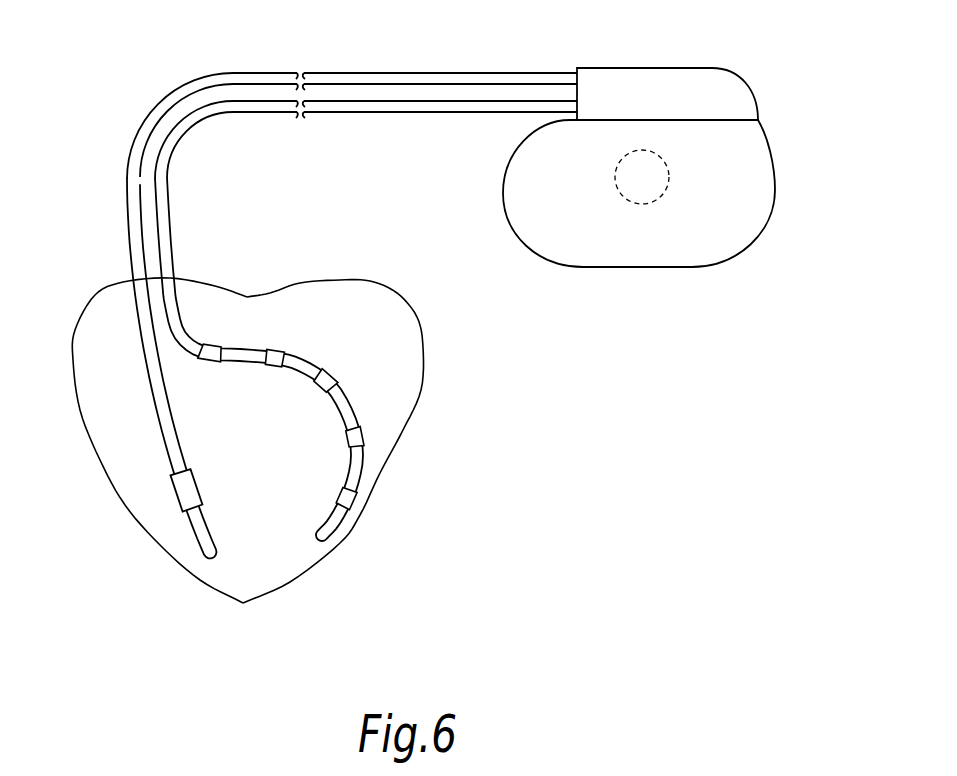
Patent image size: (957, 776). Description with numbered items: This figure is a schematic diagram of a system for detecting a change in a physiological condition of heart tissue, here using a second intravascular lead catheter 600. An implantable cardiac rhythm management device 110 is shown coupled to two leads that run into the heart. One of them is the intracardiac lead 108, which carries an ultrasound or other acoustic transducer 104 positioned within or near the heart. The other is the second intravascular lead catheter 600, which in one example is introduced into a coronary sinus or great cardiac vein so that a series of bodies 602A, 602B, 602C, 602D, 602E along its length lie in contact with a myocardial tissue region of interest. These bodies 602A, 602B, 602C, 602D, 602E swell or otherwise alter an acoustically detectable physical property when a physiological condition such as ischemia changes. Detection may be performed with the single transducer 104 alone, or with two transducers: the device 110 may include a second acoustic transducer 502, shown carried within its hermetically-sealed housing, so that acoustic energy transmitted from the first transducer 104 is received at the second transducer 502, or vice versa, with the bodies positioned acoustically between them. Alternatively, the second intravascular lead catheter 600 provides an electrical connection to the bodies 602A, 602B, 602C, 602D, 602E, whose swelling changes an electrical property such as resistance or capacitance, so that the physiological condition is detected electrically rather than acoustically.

The acoustic transducer 104 is at (172, 489).
The intracardiac lead 108 is at (238, 75).
The implantable cardiac rhythm management device 110 is at (768, 145).
The second acoustic transducer 502 is at (665, 170).
The second intravascular lead catheter 600 is at (440, 113).
The body 602A is at (217, 348).
The body 602B is at (273, 365).
The body 602C is at (337, 375).
The body 602D is at (358, 438).
The body 602E is at (350, 505).